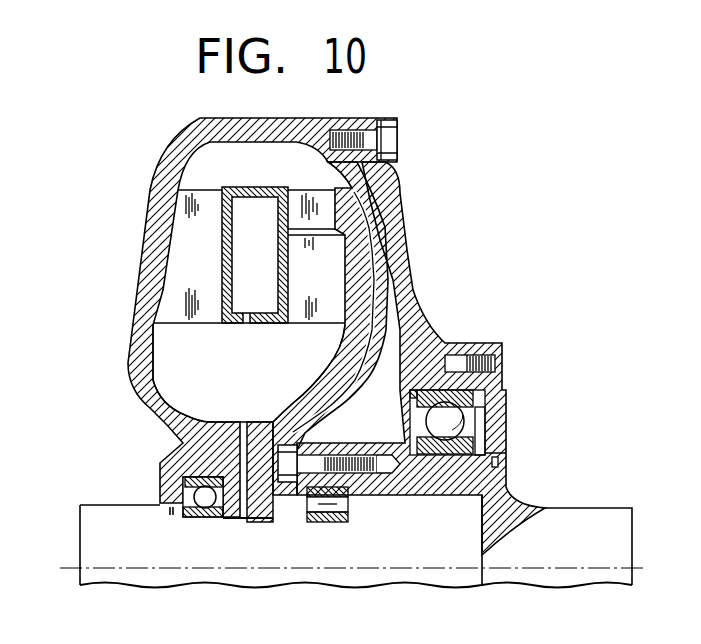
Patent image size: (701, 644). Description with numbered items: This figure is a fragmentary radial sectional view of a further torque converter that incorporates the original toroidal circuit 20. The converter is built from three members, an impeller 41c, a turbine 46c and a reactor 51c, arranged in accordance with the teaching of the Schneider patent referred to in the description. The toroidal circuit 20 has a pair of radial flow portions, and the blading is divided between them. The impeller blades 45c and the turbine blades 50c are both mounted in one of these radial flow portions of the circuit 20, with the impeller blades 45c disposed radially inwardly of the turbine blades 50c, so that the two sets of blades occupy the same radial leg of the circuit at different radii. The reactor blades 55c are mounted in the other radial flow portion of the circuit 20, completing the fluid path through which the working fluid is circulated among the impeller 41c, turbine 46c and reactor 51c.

The turbine member 46c is at (311, 178).
The turbine blades 50c is at (260, 241).
The reactor blades 55c is at (212, 270).
The impeller blades 45c is at (336, 290).
The reactor member 51c is at (167, 329).
The impeller member 41c is at (318, 329).
The toroidal circuit 20 is at (272, 395).